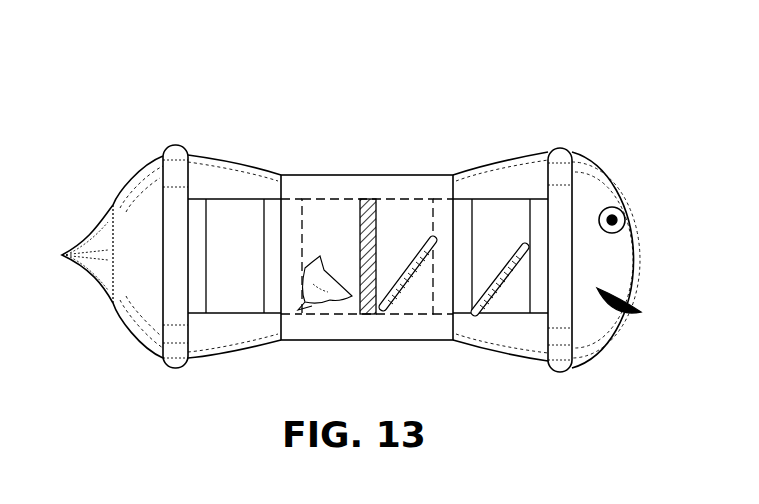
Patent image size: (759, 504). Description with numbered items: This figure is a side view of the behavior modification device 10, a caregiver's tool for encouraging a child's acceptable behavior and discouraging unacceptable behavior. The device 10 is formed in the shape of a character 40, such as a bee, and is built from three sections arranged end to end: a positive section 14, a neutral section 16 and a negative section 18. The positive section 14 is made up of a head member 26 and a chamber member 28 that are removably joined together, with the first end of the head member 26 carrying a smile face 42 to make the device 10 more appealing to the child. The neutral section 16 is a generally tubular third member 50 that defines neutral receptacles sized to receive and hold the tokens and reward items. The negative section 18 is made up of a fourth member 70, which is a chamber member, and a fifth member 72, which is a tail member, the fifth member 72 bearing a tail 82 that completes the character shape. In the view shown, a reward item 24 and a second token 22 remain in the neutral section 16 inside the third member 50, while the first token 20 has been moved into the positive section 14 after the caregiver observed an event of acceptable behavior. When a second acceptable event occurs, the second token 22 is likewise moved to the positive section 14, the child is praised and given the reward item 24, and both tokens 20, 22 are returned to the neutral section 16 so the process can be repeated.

The behavior modification device 10 is at (580, 113).
The positive section 14 is at (580, 368).
The neutral section 16 is at (403, 165).
The negative section 18 is at (165, 373).
The first token 20 is at (498, 287).
The second token 22 is at (403, 300).
The reward item 24 is at (322, 303).
The head member 26 is at (615, 188).
The chamber member 28 is at (497, 180).
The character 40 is at (640, 337).
The smile face 42 is at (635, 262).
The third member 50 is at (322, 187).
The fourth member 70 is at (229, 187).
The fifth member 72 is at (135, 215).
The tail 82 is at (98, 265).